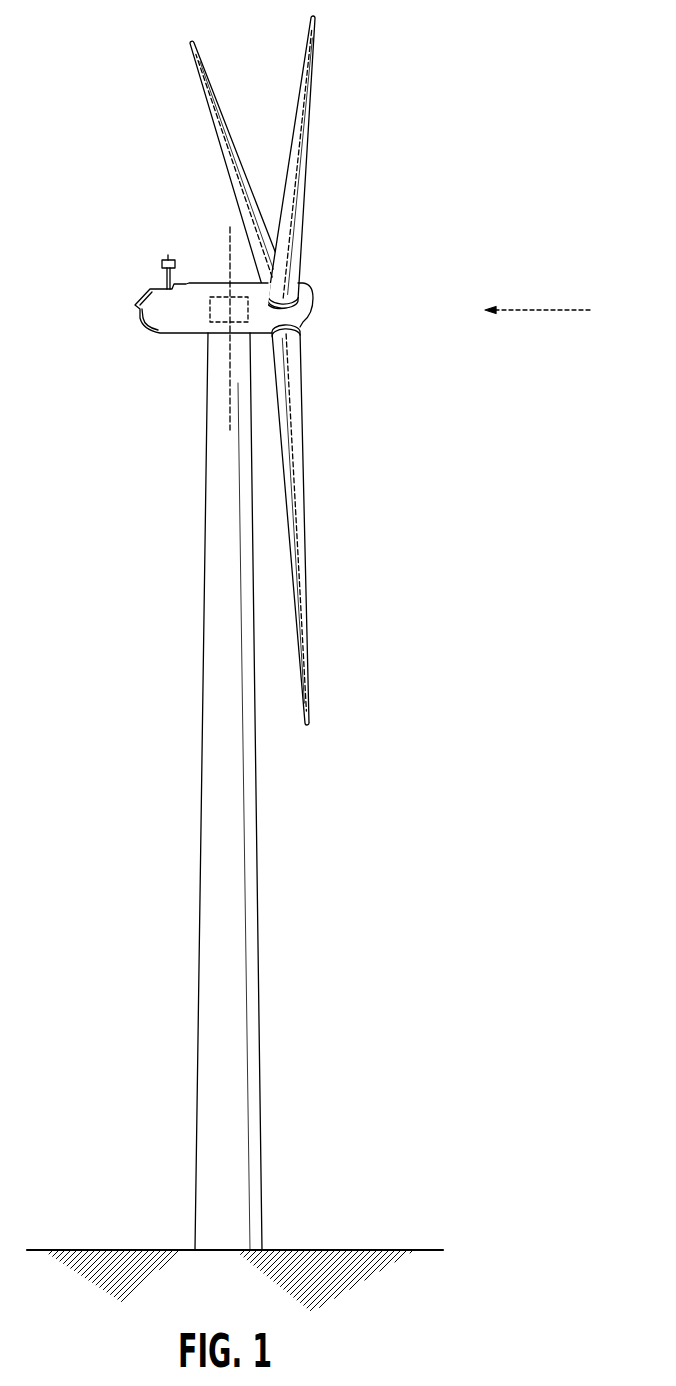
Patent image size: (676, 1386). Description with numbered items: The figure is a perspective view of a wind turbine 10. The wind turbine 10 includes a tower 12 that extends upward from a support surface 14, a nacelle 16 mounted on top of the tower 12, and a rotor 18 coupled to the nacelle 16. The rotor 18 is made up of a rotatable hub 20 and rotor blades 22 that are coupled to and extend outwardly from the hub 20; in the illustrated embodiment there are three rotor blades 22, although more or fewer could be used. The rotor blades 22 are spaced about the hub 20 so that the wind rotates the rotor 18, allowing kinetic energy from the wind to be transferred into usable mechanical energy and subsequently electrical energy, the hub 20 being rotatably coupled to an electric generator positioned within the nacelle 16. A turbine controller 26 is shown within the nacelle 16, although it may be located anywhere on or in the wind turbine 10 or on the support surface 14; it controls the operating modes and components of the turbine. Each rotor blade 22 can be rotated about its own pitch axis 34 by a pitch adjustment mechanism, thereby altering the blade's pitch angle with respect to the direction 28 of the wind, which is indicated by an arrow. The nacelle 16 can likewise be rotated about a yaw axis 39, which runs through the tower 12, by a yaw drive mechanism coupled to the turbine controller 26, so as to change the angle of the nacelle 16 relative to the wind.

The wind turbine 10 is at (317, 633).
The tower 12 is at (212, 917).
The support surface 14 is at (110, 1250).
The nacelle 16 is at (182, 336).
The rotor 18 is at (285, 370).
The rotatable hub 20 is at (313, 298).
The rotor blade 22 is at (297, 145).
The turbine controller 26 is at (217, 297).
The direction of the wind 28 is at (528, 310).
The pitch axis 34 is at (230, 160).
The yaw axis 39 is at (228, 373).